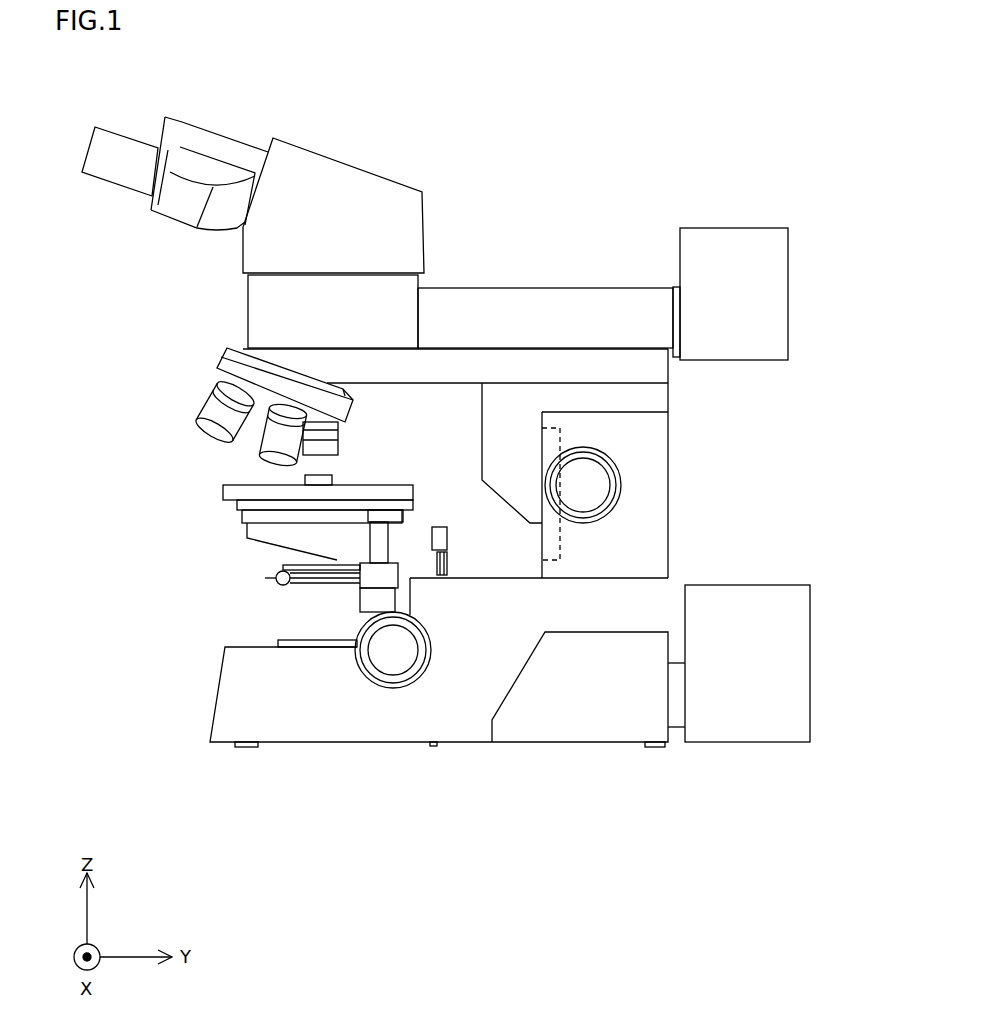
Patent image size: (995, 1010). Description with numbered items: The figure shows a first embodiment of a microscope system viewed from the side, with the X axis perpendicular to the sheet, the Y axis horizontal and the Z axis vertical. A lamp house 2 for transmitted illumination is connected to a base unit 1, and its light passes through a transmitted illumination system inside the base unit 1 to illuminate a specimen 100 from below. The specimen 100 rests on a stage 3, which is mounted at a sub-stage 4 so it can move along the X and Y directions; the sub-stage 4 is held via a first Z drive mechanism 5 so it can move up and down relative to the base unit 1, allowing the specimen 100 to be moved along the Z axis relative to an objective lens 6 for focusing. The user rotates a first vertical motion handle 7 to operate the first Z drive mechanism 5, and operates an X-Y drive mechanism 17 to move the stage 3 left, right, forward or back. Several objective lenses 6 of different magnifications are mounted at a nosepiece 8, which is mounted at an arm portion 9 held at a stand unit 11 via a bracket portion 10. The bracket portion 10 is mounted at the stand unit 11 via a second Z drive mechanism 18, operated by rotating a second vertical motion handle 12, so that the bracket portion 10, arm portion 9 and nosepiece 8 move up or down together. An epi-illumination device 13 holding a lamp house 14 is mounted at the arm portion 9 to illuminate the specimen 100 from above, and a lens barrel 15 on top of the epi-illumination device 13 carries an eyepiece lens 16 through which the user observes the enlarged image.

The base unit 1 is at (313, 728).
The lamp house 2 is at (722, 733).
The stage 3 is at (228, 492).
The sub-stage 4 is at (243, 527).
The first Z drive mechanism 5 is at (450, 563).
The objective lens 6 is at (332, 447).
The first vertical motion handle 7 is at (428, 638).
The nosepiece 8 is at (222, 365).
The arm portion 9 is at (660, 373).
The bracket portion 10 is at (662, 402).
The stand unit 11 is at (653, 513).
The second vertical motion handle 12 is at (620, 472).
The epi-illumination device 13 is at (495, 300).
The lamp house 14 is at (753, 243).
The lens barrel 15 is at (370, 200).
The eyepiece lens 16 is at (107, 172).
The X-Y drive mechanism 17 is at (373, 600).
The second Z drive mechanism 18 is at (550, 538).
The specimen 100 is at (333, 473).